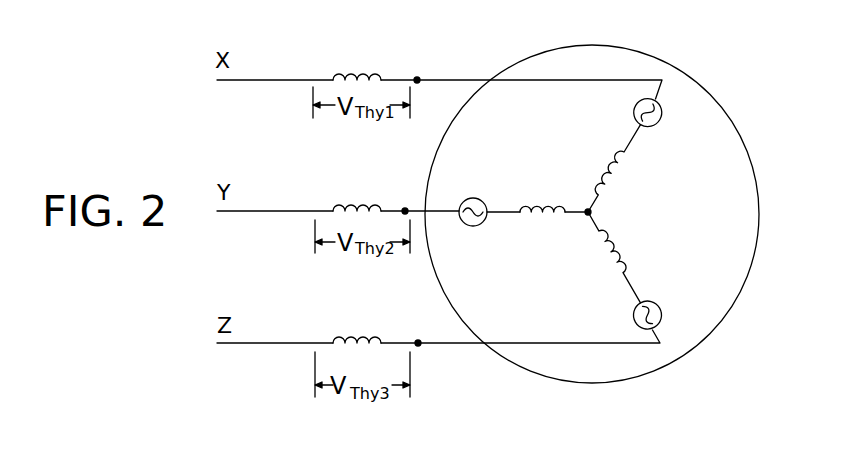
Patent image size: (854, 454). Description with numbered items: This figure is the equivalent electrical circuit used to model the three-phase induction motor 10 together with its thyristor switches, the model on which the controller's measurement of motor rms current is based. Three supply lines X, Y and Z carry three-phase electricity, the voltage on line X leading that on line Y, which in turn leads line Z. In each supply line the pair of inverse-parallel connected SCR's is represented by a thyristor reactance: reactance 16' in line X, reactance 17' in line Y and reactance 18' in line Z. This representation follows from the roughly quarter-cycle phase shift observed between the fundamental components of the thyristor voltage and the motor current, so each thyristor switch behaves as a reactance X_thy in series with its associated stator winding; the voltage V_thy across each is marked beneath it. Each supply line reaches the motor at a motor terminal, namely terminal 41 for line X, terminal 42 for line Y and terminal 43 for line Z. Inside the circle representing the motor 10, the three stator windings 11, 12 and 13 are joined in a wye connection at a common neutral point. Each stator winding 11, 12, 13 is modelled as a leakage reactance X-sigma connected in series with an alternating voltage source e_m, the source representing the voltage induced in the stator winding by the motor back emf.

The alternating current induction electric motor 10 is at (695, 346).
The stator winding 11 is at (648, 92).
The stator winding 12 is at (573, 196).
The stator winding 13 is at (652, 340).
The thyristor reactance 16' is at (343, 54).
The thyristor reactance 17' is at (331, 186).
The thyristor reactance 18' is at (318, 316).
The motor terminal 41 is at (417, 80).
The motor terminal 42 is at (405, 211).
The motor terminal 43 is at (418, 343).